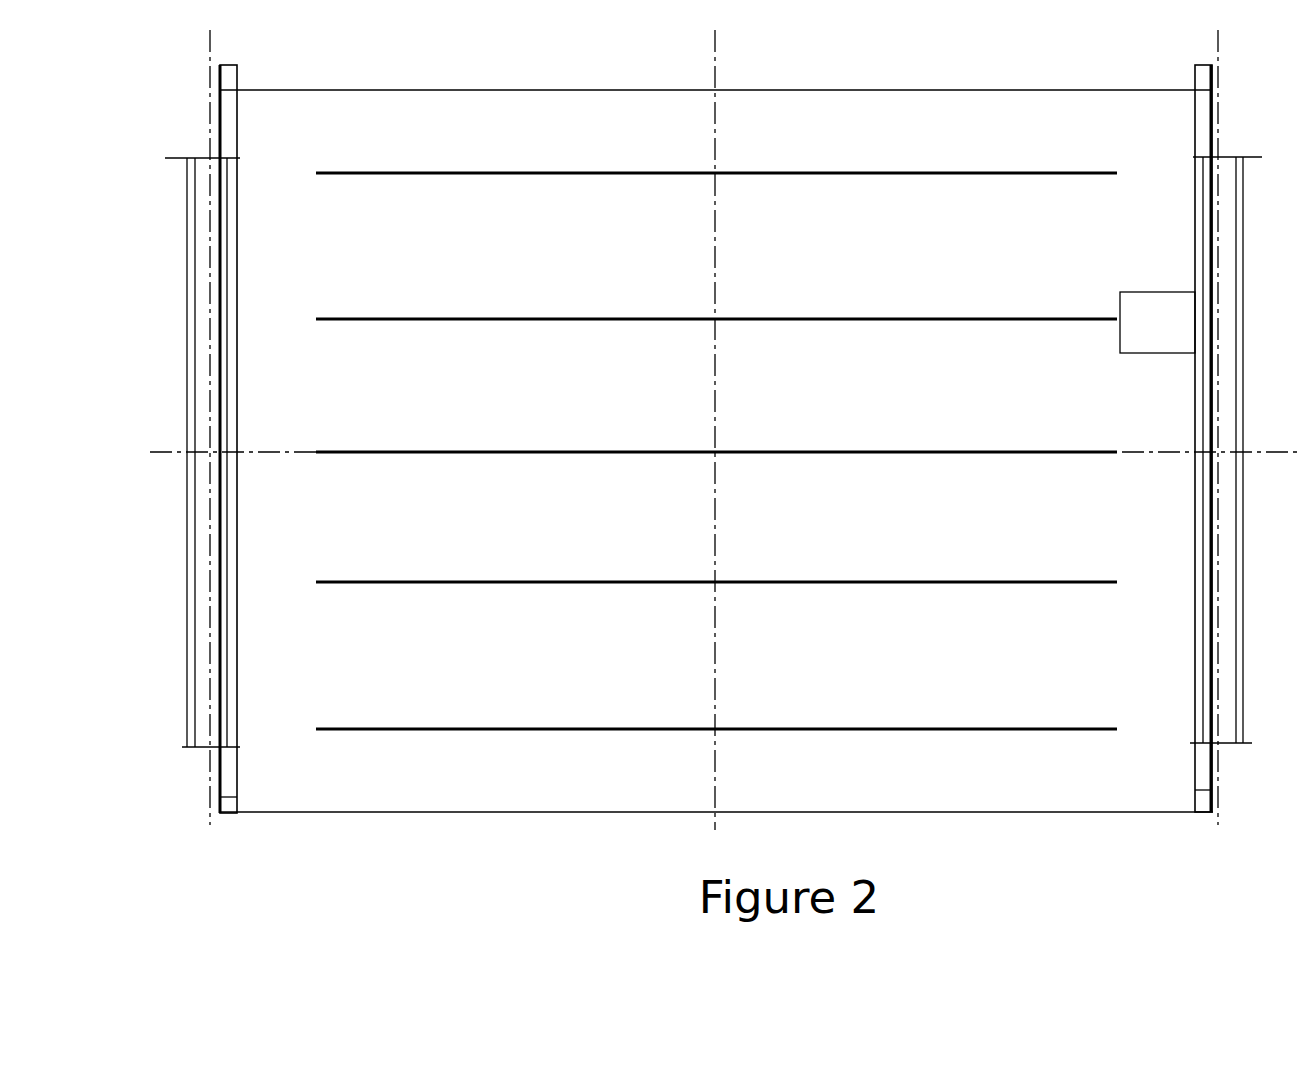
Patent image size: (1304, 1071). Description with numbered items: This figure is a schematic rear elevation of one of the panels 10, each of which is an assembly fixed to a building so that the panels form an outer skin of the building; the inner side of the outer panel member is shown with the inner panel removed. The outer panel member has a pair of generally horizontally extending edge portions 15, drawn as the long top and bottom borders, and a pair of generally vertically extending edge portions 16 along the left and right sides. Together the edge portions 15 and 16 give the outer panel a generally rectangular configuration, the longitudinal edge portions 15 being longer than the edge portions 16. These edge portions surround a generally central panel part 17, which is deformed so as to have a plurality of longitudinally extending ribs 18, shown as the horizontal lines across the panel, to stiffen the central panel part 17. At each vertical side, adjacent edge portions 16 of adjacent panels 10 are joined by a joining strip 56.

The panel 10 is at (714, 491).
The horizontally extending edge portion 15 is at (640, 90).
The vertically extending edge portion 16 is at (238, 798).
The central panel part 17 is at (590, 519).
The longitudinally extending rib 18 is at (775, 321).
The joining strip 56 is at (198, 750).